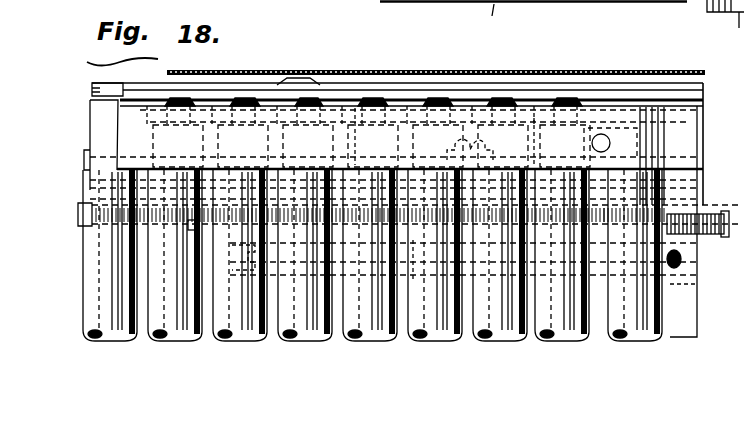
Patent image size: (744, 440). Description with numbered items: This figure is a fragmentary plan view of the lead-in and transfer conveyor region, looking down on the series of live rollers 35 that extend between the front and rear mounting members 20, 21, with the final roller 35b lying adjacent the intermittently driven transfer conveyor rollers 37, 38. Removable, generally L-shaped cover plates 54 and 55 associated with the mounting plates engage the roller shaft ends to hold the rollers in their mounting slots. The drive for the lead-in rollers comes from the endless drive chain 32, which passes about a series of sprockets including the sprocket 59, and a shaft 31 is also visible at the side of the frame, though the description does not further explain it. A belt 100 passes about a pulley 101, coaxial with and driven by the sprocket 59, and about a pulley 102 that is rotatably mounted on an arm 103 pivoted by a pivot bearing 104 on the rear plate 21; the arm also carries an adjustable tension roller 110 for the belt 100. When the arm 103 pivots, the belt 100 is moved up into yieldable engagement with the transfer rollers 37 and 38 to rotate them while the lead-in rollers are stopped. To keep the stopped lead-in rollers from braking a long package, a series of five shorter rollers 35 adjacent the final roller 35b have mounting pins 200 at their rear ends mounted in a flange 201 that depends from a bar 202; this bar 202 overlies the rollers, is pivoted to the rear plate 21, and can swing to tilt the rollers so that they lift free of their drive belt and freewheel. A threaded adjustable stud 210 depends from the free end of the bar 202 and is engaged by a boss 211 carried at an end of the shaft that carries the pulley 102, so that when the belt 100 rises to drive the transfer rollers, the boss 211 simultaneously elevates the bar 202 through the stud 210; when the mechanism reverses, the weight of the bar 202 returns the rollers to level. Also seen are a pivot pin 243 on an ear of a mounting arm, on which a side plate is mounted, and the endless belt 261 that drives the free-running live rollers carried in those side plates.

The mounting member 20 is at (362, 0).
The mounting member 21 is at (477, 97).
The shaft 31 is at (718, 212).
The endless drive chain 32 is at (78, 213).
The live roller 35 is at (92, 102).
The final roller 35b is at (498, 336).
The transfer conveyor roller 37 is at (576, 338).
The transfer conveyor roller 38 is at (697, 337).
The cover plate 54 is at (473, 23).
The cover plate 55 is at (385, 73).
The sprocket 59 is at (191, 230).
The belt 100 is at (681, 260).
The pulley 101 is at (239, 284).
The pulley 102 is at (697, 284).
The arm 103 is at (88, 169).
The pivot bearing 104 is at (302, 98).
The adjustable tension roller 110 is at (413, 282).
The mounting pin 200 is at (307, 97).
The flange 201 is at (356, 108).
The bar 202 is at (534, 117).
The threaded adjustable stud 210 is at (600, 134).
The boss 211 is at (620, 125).
The pivot pin 243 is at (724, 12).
The endless belt 261 is at (723, 34).